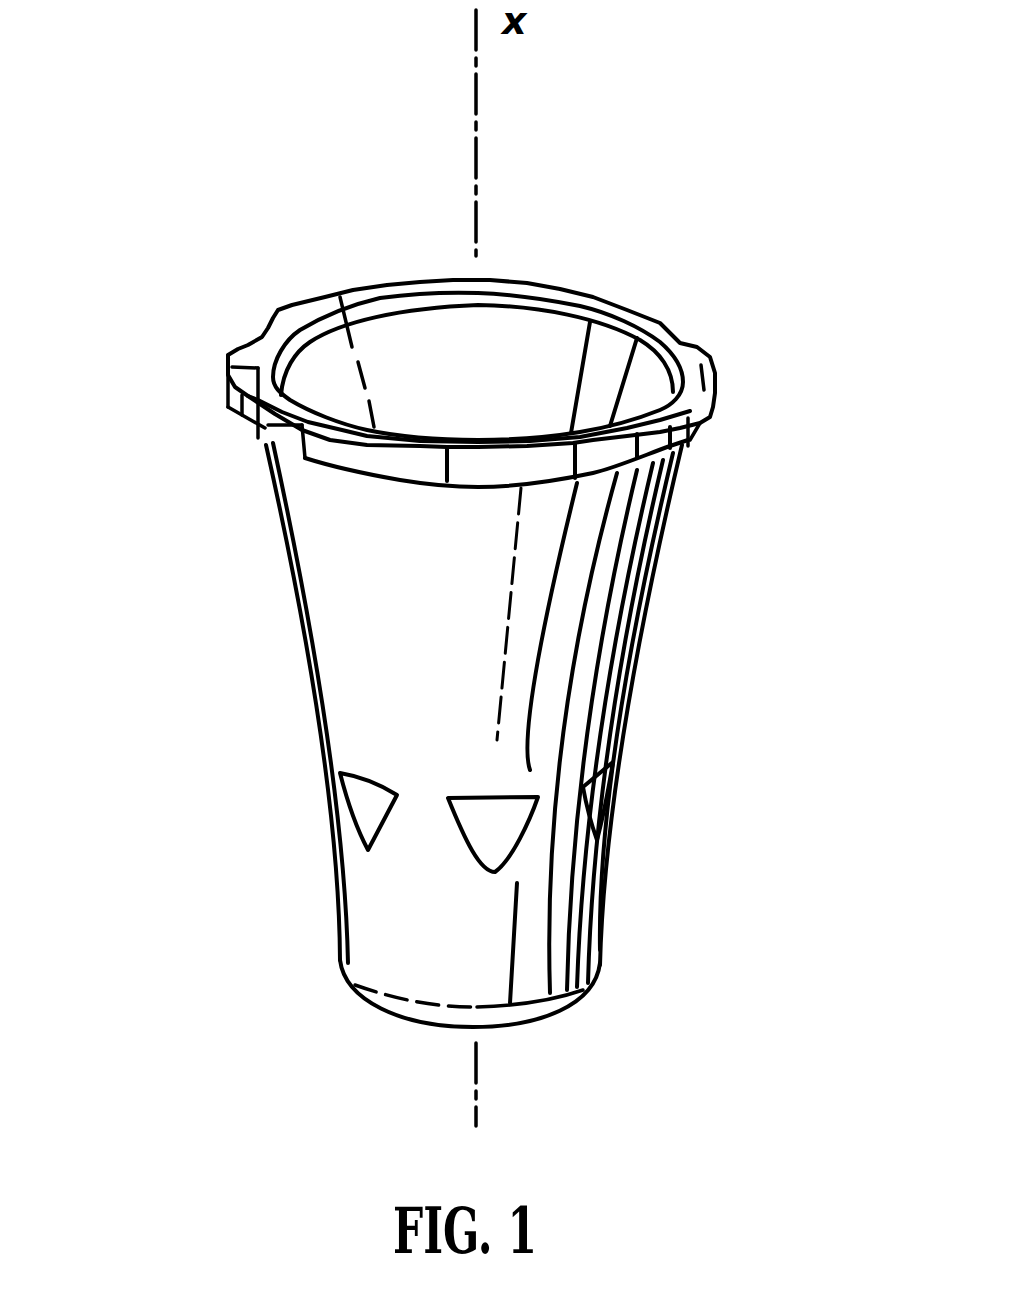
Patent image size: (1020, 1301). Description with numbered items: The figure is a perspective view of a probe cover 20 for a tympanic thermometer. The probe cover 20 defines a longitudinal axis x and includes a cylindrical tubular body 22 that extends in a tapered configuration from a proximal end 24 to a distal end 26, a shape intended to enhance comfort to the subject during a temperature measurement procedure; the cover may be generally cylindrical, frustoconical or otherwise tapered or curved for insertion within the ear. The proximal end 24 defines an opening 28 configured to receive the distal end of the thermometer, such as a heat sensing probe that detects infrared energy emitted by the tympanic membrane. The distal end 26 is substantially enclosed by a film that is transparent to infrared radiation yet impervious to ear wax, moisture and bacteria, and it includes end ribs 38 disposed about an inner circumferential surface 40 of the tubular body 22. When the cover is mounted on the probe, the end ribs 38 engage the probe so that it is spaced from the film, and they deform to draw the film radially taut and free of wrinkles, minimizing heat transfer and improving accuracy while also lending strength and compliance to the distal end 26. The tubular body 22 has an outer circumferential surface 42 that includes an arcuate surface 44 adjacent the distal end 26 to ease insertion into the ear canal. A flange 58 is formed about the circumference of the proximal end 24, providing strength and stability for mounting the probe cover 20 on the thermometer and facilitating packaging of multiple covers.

The probe cover 20 is at (196, 737).
The cylindrical tubular body 22 is at (643, 625).
The proximal end 24 is at (242, 416).
The distal end 26 is at (362, 965).
The opening 28 is at (338, 294).
The end ribs 38 is at (560, 1020).
The inner circumferential surface 40 is at (450, 327).
The outer circumferential surface 42 is at (603, 897).
The arcuate surface 44 is at (400, 992).
The flange 58 is at (702, 348).